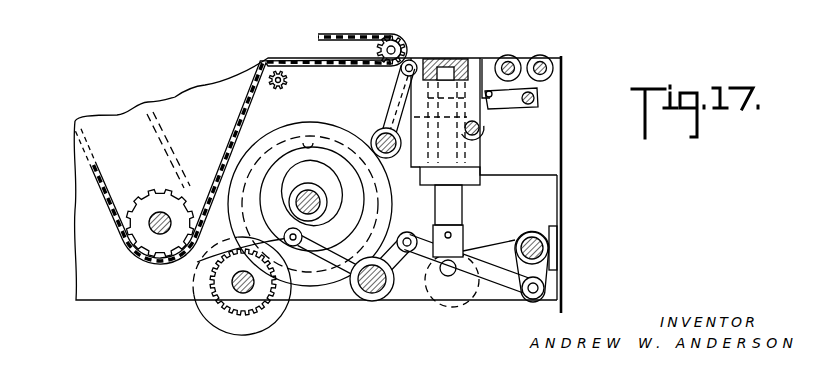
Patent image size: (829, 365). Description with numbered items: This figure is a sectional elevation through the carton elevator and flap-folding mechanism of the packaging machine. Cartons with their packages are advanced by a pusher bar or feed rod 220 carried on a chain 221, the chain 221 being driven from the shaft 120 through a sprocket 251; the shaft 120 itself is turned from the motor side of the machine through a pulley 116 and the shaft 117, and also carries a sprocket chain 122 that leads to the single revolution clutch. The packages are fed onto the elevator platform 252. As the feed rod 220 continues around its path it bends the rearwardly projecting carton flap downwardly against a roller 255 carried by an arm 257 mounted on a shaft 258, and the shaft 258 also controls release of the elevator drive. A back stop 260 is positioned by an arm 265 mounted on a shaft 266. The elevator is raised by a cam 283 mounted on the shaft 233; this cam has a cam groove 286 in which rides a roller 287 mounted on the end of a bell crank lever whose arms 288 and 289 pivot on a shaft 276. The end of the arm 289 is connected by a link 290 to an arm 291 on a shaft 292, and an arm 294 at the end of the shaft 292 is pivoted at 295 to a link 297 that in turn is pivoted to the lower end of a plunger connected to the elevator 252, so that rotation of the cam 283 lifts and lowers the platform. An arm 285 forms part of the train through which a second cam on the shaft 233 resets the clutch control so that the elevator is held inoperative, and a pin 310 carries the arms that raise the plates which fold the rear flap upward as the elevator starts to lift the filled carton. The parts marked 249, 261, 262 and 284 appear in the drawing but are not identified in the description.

The pulley 116 is at (223, 322).
The shaft 117 is at (233, 292).
The shaft 120 is at (160, 233).
The sprocket chain 122 is at (167, 125).
The pusher bar 220 is at (393, 35).
The chain 221 is at (108, 198).
The shaft 233 is at (318, 202).
The plunger rod 249 is at (452, 204).
The sprocket 251 is at (141, 235).
The elevator platform 252 is at (458, 58).
The roller 255 is at (412, 60).
The arm 257 is at (392, 107).
The shaft 258 is at (378, 134).
The back stop 260 is at (482, 62).
The roller 261 is at (547, 57).
The roller 262 is at (510, 56).
The arm 265 is at (511, 101).
The shaft 266 is at (536, 98).
The shaft 276 is at (375, 290).
The cam 283 is at (272, 126).
The cam track 284 is at (246, 153).
The arm 285 is at (250, 305).
The cam groove 286 is at (313, 142).
The roller 287 is at (233, 250).
The arm 288 is at (326, 262).
The arm 289 is at (408, 262).
The link 290 is at (498, 287).
The arm 291 is at (540, 271).
The shaft 292 is at (544, 249).
The arm 294 is at (498, 240).
The pivot 295 is at (453, 300).
The link 297 is at (460, 240).
The pin 310 is at (479, 132).